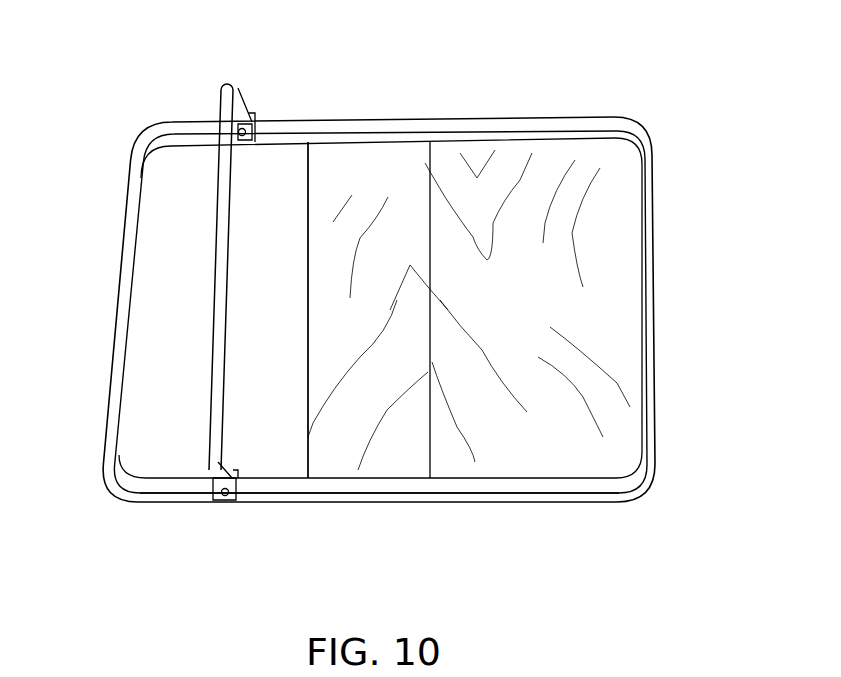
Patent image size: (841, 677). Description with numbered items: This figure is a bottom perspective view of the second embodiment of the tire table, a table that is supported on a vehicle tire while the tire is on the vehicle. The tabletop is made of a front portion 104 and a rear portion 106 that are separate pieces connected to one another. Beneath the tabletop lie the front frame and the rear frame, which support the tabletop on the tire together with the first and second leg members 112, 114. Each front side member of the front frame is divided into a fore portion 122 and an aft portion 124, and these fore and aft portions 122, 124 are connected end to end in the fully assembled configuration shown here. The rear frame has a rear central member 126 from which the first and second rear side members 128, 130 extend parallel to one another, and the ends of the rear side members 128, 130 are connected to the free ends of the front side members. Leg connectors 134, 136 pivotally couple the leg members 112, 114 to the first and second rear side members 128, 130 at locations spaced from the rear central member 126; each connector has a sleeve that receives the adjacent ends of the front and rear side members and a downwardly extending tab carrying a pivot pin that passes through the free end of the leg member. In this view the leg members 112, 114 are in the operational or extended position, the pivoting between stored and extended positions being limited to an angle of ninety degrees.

The front portion 104 is at (469, 309).
The rear portion 106 is at (108, 341).
The first leg member 112 is at (241, 77).
The second leg member 114 is at (214, 480).
The fore portion 122 is at (525, 487).
The aft portion 124 is at (351, 487).
The rear central member 126 is at (126, 212).
The first rear side member 128 is at (182, 120).
The second rear side member 130 is at (158, 497).
The leg connector 134 is at (253, 118).
The leg connector 136 is at (237, 497).